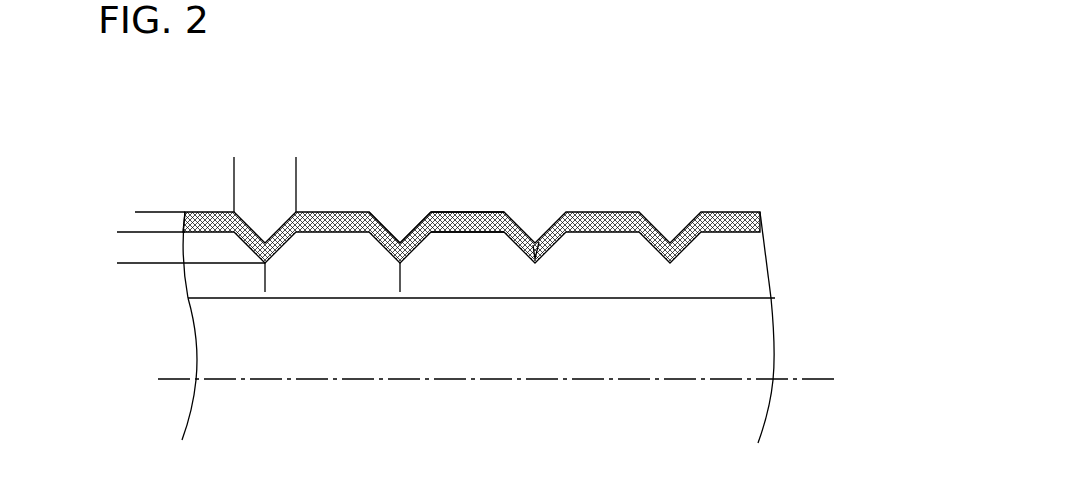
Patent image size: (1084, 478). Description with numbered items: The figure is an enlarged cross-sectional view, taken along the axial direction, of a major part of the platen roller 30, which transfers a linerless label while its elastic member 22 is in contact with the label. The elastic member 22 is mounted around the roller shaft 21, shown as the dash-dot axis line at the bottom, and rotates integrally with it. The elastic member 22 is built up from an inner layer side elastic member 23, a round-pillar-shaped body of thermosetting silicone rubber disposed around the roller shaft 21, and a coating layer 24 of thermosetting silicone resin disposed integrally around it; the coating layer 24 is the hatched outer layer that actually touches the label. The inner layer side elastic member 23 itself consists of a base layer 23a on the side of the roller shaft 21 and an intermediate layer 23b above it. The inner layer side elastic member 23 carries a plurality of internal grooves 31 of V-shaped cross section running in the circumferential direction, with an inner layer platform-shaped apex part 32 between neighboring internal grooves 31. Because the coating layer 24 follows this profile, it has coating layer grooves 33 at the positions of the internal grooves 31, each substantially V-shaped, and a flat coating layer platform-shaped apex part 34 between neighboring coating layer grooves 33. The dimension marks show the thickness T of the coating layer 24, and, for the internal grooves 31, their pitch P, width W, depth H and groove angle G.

The roller shaft 21 is at (820, 383).
The elastic member 22 is at (883, 210).
The inner layer side elastic member 23 is at (834, 255).
The base layer 23a is at (745, 322).
The intermediate layer 23b is at (745, 272).
The coating layer 24 is at (762, 222).
The platen roller 30 is at (650, 180).
The internal grooves 31 is at (389, 231).
The inner layer platform-shaped apex part 32 is at (480, 226).
The coating layer grooves 33 is at (413, 229).
The coating layer platform-shaped apex part 34 is at (462, 210).
The groove angle G is at (545, 247).
The width W is at (234, 162).
The thickness T is at (143, 260).
The depth H is at (117, 200).
The pitch P is at (265, 277).